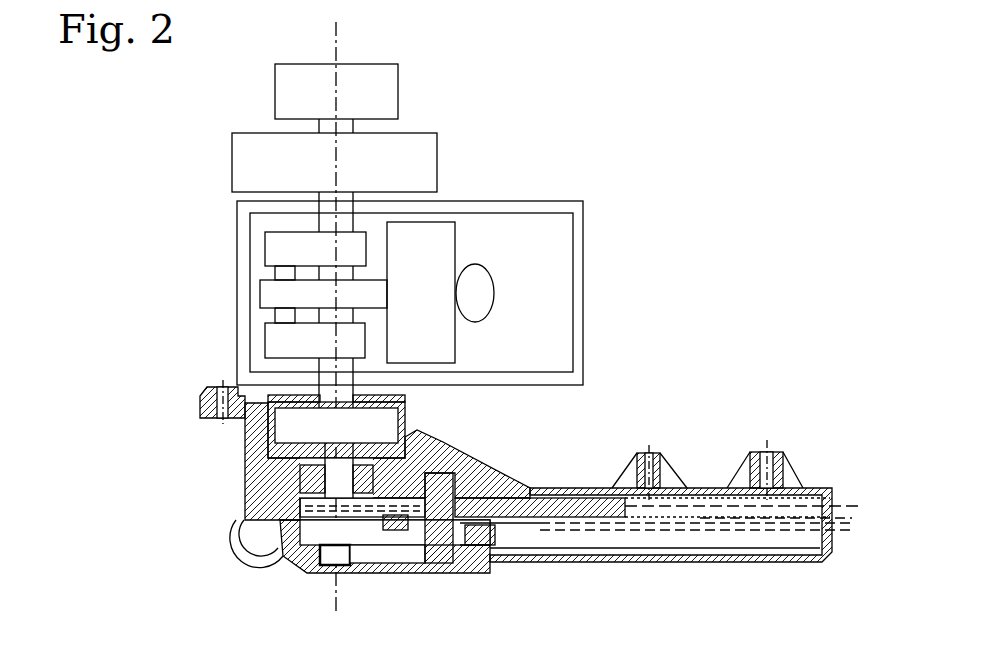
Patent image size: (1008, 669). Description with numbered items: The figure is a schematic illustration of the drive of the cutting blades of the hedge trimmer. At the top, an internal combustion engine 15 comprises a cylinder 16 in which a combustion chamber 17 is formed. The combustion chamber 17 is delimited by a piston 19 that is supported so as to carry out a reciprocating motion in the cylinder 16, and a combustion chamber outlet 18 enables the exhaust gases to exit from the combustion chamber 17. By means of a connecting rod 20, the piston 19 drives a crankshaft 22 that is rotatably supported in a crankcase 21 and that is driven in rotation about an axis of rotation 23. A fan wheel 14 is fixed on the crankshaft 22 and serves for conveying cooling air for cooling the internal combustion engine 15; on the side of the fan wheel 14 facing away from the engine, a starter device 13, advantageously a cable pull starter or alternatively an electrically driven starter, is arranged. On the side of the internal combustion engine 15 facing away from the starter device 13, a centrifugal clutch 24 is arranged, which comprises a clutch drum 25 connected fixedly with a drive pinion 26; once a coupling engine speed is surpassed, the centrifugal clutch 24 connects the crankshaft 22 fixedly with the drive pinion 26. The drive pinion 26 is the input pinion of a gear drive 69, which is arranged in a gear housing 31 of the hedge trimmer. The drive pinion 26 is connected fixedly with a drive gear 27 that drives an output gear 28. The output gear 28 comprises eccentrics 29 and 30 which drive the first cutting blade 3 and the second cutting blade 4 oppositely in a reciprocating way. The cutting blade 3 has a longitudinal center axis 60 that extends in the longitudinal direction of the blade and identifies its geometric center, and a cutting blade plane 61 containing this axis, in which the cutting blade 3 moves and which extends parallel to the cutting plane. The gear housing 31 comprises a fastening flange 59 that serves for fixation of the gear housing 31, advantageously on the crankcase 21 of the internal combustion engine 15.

The first cutting blade 3 is at (733, 505).
The second cutting blade 4 is at (775, 537).
The starter device 13 is at (385, 86).
The fan wheel 14 is at (413, 150).
The internal combustion engine 15 is at (424, 273).
The cylinder 16 is at (538, 207).
The combustion chamber 17 is at (548, 290).
The combustion chamber outlet 18 is at (478, 308).
The piston 19 is at (428, 235).
The connecting rod 20 is at (275, 293).
The crankcase 21 is at (243, 258).
The crankshaft 22 is at (327, 222).
The axis of rotation 23 is at (337, 49).
The centrifugal clutch 24 is at (266, 429).
The clutch drum 25 is at (267, 438).
The drive pinion 26 is at (290, 494).
The drive gear 27 is at (298, 568).
The output gear 28 is at (393, 523).
The eccentric 29 is at (422, 497).
The eccentric 30 is at (480, 537).
The gear housing 31 is at (575, 563).
The fastening flange 59 is at (207, 396).
The longitudinal center axis 60 is at (805, 505).
The cutting blade plane 61 is at (696, 524).
The gear drive 69 is at (369, 554).